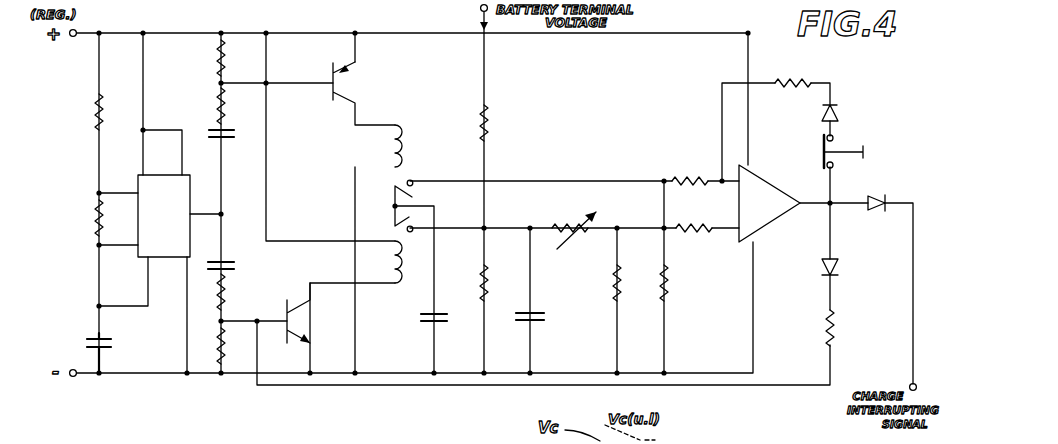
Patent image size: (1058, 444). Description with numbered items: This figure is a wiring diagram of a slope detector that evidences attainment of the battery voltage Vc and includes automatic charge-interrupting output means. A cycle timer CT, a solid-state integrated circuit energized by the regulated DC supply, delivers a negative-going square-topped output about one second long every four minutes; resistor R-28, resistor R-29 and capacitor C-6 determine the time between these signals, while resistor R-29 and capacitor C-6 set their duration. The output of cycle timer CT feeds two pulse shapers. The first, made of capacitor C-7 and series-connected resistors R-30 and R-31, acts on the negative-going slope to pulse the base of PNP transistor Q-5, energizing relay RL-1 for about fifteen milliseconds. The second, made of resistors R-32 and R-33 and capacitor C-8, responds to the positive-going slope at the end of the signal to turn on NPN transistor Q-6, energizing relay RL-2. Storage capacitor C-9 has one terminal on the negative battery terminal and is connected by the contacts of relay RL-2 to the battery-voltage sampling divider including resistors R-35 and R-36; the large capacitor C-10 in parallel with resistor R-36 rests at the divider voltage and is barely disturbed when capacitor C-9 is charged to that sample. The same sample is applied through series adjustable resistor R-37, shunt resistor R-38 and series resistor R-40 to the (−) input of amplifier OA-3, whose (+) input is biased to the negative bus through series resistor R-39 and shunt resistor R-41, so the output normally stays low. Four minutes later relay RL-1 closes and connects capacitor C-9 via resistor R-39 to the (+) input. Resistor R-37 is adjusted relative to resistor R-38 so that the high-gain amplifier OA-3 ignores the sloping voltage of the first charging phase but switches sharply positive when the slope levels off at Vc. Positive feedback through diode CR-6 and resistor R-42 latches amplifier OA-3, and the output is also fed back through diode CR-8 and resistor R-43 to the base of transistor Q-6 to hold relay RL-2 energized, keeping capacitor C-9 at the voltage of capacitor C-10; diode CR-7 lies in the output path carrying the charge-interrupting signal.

The resistor R-28 is at (99, 112).
The resistor R-29 is at (99, 218).
The capacitor C-6 is at (85, 343).
The cycle timer CT is at (164, 216).
The resistor R-30 is at (213, 60).
The resistor R-31 is at (214, 106).
The capacitor C-7 is at (240, 133).
The capacitor C-8 is at (236, 266).
The resistor R-32 is at (228, 294).
The resistor R-33 is at (215, 338).
The PNP transistor Q-5 is at (340, 83).
The NPN transistor Q-6 is at (293, 323).
The relay RL-1 is at (403, 138).
The relay RL-2 is at (403, 253).
The storage capacitor C-9 is at (416, 322).
The resistor R-35 is at (492, 126).
The resistor R-36 is at (484, 270).
The large capacitor C-10 is at (547, 316).
The adjustable resistor R-37 is at (572, 218).
The shunt resistor R-38 is at (612, 288).
The series resistor R-39 is at (705, 172).
The series resistor R-40 is at (693, 240).
The shunt resistor R-41 is at (672, 292).
The resistor R-42 is at (791, 94).
The amplifier OA-3 is at (806, 165).
The diode CR-6 is at (842, 113).
The diode CR-7 is at (870, 197).
The diode CR-8 is at (838, 268).
The resistor R-43 is at (840, 330).